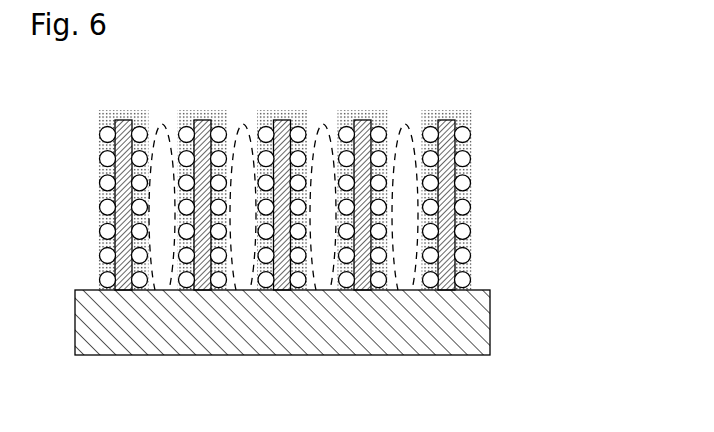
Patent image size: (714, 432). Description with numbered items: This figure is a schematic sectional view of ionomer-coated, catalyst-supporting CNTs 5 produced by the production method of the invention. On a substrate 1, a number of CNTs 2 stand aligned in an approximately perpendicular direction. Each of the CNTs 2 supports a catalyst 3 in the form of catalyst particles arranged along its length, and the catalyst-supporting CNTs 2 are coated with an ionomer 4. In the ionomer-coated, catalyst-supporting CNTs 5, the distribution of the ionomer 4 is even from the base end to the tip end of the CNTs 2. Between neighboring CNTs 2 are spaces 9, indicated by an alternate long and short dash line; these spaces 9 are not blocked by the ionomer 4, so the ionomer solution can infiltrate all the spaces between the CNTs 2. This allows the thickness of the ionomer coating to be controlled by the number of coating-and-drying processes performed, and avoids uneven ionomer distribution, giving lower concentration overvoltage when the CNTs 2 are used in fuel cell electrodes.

The substrate 1 is at (490, 318).
The CNTs 2 is at (468, 244).
The catalyst 3 is at (550, 257).
The ionomer 4 is at (468, 213).
The ionomer-coated, catalyst-supporting CNTs 5 is at (512, 200).
The spaces 9 is at (392, 290).